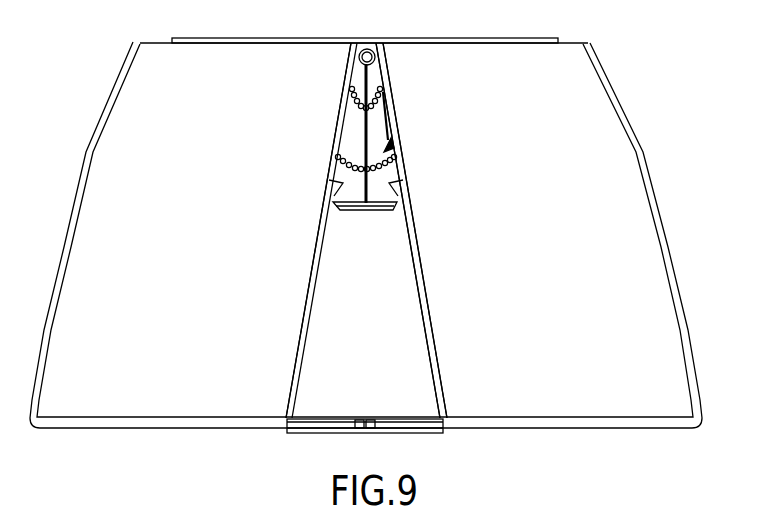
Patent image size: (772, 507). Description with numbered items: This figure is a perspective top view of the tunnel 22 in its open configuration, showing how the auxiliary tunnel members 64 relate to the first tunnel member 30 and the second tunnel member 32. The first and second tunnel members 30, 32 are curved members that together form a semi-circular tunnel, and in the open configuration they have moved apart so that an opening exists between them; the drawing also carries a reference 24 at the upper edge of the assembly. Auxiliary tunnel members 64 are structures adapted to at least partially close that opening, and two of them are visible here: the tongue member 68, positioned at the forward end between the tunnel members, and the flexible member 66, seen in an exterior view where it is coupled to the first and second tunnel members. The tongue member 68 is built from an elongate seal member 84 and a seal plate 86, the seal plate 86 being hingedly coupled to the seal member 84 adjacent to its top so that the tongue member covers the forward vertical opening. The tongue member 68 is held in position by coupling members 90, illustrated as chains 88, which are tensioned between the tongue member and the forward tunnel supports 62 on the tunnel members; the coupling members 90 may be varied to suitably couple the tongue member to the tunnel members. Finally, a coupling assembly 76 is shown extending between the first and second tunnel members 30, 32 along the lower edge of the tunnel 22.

The tunnel 22 is at (668, 80).
The upper rail 24 is at (637, 60).
The first tunnel member 30 is at (110, 178).
The second tunnel member 32 is at (642, 166).
The forward tunnel supports 62 is at (343, 184).
The auxiliary tunnel member 64 is at (383, 174).
The flexible member 66 is at (408, 372).
The tongue member 68 is at (349, 120).
The coupling assembly 76 is at (309, 417).
The elongate seal member 84 is at (347, 138).
The seal plate 86 is at (373, 210).
The chains 88 is at (383, 92).
The coupling members 90 is at (400, 130).